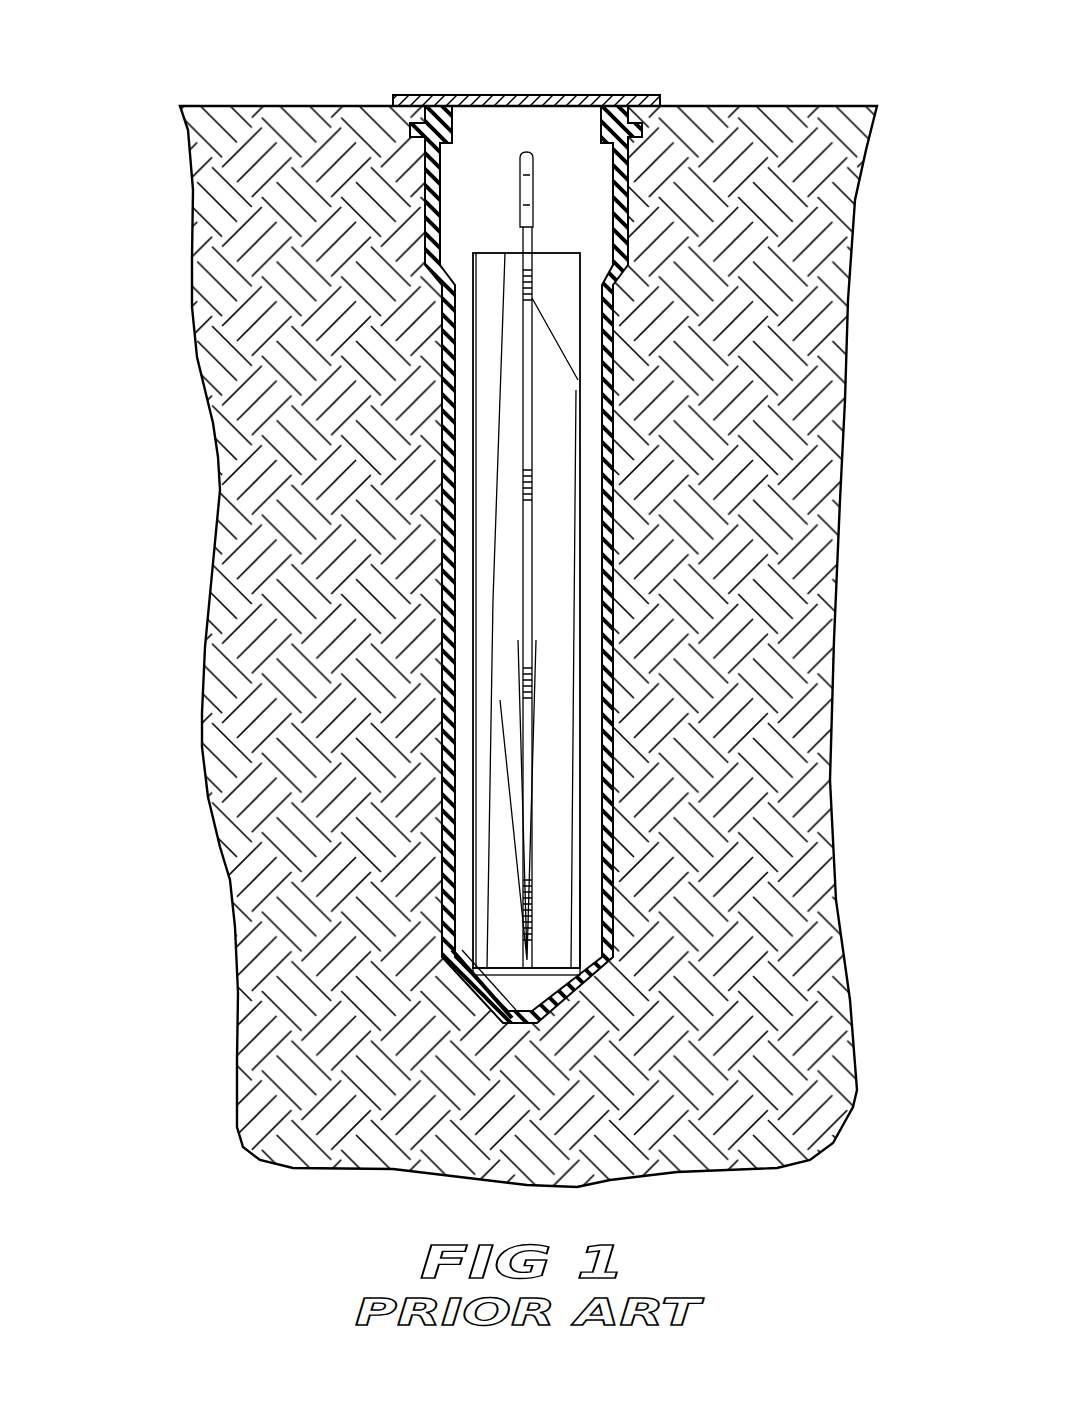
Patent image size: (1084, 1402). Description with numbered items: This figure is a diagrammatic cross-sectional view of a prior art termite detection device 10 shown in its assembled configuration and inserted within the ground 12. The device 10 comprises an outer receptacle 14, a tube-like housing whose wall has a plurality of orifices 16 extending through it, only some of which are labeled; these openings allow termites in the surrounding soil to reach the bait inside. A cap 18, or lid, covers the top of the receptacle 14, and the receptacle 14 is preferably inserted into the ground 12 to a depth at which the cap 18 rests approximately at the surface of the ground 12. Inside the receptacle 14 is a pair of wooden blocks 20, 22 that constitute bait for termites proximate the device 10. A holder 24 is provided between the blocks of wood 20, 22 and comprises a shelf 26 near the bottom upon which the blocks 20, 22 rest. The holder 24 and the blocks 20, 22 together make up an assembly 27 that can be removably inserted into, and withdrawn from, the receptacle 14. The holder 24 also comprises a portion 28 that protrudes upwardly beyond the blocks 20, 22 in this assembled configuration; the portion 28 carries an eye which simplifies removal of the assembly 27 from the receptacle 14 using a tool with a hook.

The termite detection device 10 is at (398, 38).
The ground 12 is at (756, 160).
The outer receptacle 14 is at (533, 564).
The orifices 16 is at (436, 393).
The cap 18 is at (568, 97).
The wooden block 20 is at (490, 275).
The wooden block 22 is at (552, 278).
The holder 24 is at (529, 405).
The shelf 26 is at (490, 1011).
The assembly 27 is at (590, 907).
The portion 28 is at (508, 190).